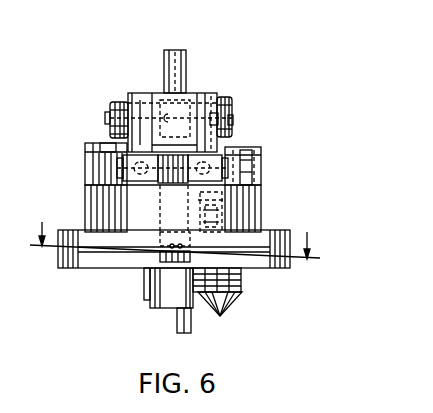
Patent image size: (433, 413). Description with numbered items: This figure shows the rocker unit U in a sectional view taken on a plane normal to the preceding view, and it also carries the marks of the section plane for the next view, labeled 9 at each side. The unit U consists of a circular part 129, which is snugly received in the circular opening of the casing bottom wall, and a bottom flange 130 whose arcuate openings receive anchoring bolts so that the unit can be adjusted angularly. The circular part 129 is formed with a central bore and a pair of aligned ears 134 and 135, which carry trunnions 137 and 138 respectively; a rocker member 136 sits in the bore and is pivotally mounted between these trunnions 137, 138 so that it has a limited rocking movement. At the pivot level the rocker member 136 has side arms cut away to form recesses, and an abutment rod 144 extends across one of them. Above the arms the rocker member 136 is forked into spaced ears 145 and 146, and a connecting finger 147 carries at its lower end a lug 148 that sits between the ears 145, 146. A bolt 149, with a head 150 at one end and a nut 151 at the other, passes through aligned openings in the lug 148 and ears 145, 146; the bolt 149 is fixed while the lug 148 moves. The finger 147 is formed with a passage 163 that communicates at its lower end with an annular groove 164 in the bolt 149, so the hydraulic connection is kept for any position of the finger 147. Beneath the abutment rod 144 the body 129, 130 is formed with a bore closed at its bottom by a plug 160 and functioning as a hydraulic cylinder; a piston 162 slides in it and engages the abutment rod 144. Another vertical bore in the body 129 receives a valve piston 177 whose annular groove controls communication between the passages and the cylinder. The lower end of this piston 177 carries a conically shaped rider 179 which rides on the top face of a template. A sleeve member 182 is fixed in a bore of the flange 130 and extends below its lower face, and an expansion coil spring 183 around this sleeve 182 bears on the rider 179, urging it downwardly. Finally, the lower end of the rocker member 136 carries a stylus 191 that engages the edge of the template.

The connecting finger 147 is at (186, 60).
The passage 163 is at (175, 66).
The bolt 149 is at (138, 105).
The annular groove 164 is at (178, 103).
The nut 151 is at (119, 101).
The ear 145 is at (113, 110).
The lug 148 is at (156, 136).
The head 150 is at (228, 101).
The ear 146 is at (233, 123).
The abutment rod 144 is at (163, 183).
The ear 134 is at (93, 146).
The trunnion 137 is at (89, 168).
The ear 135 is at (257, 147).
The trunnion 138 is at (258, 164).
The rocker unit U is at (83, 192).
The circular part 129 is at (253, 196).
The piston 177 is at (240, 210).
The sleeve member 182 is at (222, 218).
The piston 162 is at (162, 216).
The bottom flange 130 is at (112, 261).
The section line 9- 9 is at (175, 252).
The plug 160 is at (171, 288).
The rocker member 136 is at (145, 300).
The stylus 191 is at (177, 327).
The expansion coil spring 183 is at (239, 285).
The conically shaped rider 179 is at (222, 313).